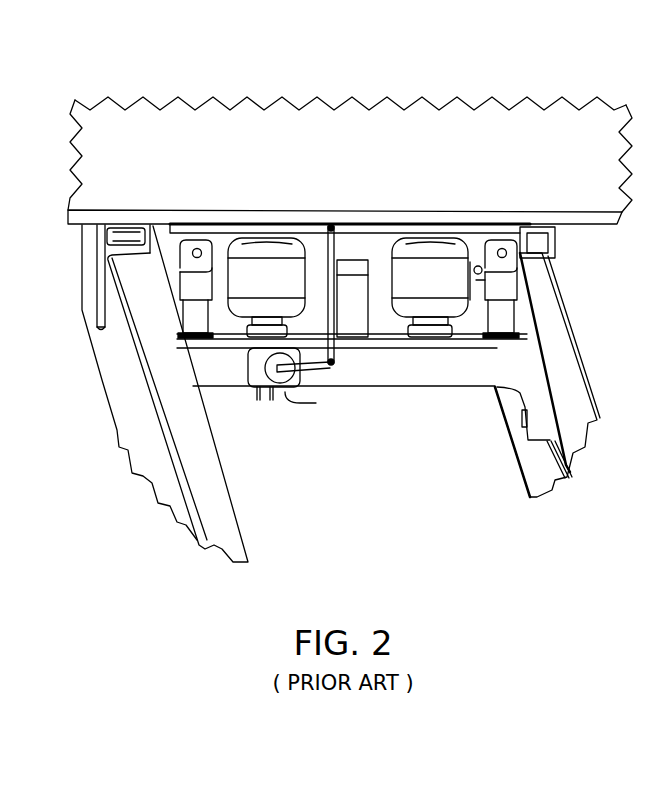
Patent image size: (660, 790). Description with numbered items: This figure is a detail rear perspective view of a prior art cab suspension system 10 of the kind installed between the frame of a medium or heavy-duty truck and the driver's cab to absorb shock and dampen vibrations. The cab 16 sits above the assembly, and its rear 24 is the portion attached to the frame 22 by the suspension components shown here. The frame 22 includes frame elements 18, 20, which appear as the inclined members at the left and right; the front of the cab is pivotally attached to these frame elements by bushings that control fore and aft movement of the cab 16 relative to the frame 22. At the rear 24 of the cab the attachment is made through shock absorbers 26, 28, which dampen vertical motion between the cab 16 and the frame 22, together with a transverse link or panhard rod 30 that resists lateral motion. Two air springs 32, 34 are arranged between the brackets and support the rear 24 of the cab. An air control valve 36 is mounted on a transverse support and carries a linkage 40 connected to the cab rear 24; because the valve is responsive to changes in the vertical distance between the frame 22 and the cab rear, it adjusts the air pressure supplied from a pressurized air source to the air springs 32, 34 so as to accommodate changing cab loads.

The cab suspension system 10 is at (505, 503).
The cab 16 is at (246, 124).
The frame element 18 is at (220, 540).
The frame element 20 is at (562, 348).
The frame 22 is at (118, 431).
The rear of the cab 24 is at (371, 152).
The shock absorber 26 is at (187, 277).
The shock absorber 28 is at (503, 283).
The panhard rod 30 is at (315, 267).
The air spring 32 is at (252, 290).
The air spring 34 is at (416, 290).
The air control valve 36 is at (265, 382).
The linkage 40 is at (334, 362).